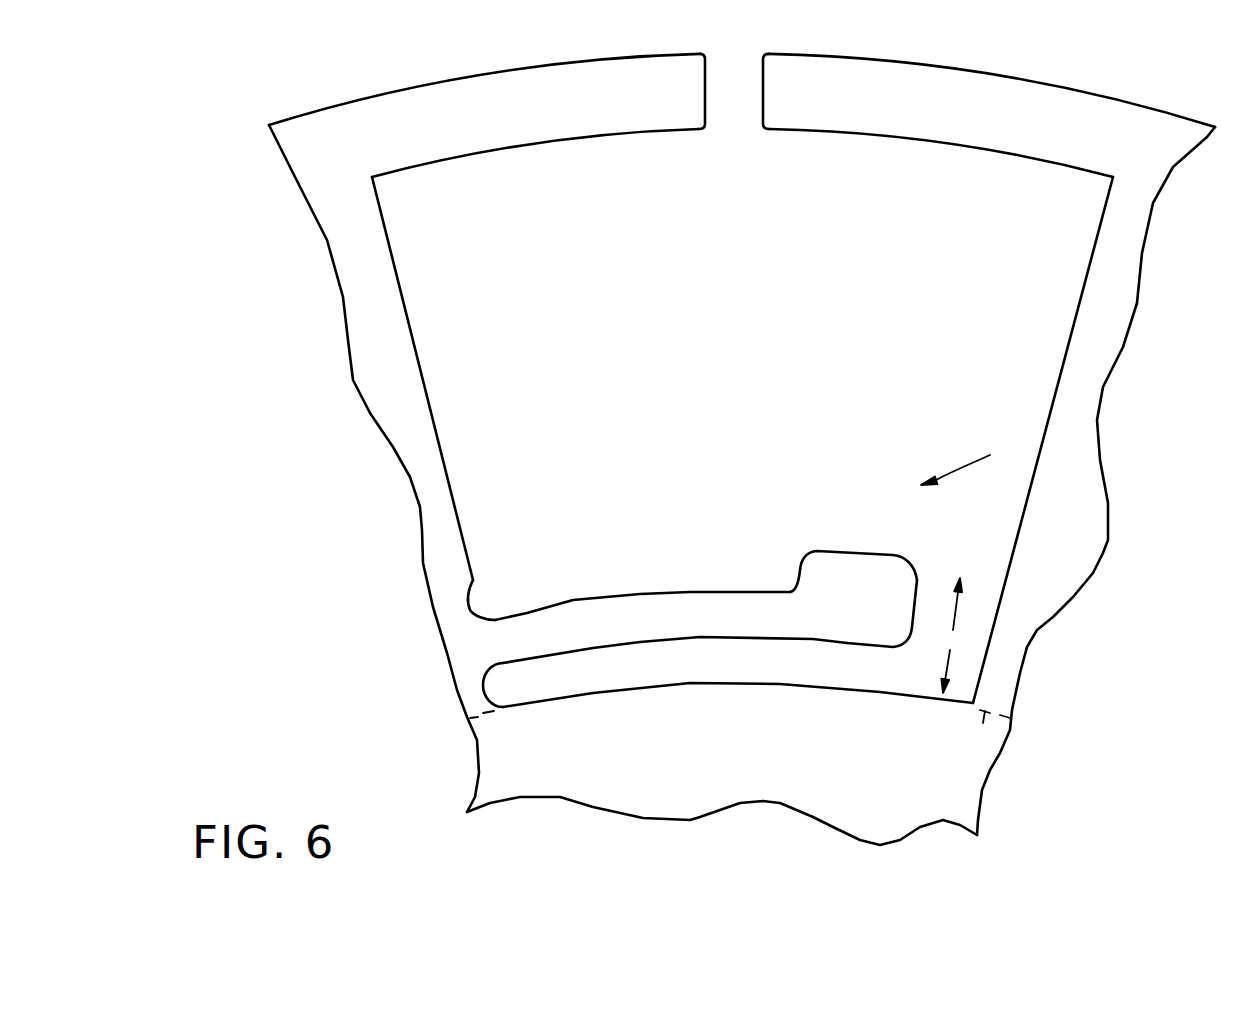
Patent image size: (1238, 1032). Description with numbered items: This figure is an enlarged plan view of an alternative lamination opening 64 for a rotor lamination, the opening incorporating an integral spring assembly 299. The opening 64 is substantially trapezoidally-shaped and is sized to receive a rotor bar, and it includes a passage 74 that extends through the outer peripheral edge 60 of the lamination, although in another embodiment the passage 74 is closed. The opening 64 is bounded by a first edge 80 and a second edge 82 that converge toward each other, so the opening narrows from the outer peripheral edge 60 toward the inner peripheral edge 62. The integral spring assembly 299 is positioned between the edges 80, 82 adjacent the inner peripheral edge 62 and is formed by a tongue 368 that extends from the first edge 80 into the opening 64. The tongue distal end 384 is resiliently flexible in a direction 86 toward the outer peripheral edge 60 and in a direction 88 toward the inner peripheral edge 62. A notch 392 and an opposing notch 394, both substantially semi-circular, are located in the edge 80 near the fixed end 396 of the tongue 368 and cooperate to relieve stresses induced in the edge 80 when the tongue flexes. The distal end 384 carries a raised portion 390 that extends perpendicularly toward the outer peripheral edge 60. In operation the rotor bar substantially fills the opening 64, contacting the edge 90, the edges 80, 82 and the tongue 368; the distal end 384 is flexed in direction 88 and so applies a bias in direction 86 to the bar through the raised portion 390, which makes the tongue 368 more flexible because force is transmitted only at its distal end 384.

The outer peripheral edge 60 is at (1133, 102).
The inner peripheral edge 62 is at (977, 728).
The lamination opening 64 is at (737, 357).
The passage 74 is at (737, 102).
The first edge 80 is at (422, 361).
The second edge 82 is at (1067, 357).
The direction 86 is at (952, 608).
The direction 88 is at (947, 661).
The edge 90 is at (523, 147).
The integral spring assembly 299 is at (981, 463).
The tongue 368 is at (643, 596).
The tongue distal end 384 is at (848, 622).
The raised portion 390 is at (852, 550).
The notch 392 is at (483, 692).
The opposing notch 394 is at (462, 608).
The fixed end 396 is at (492, 645).